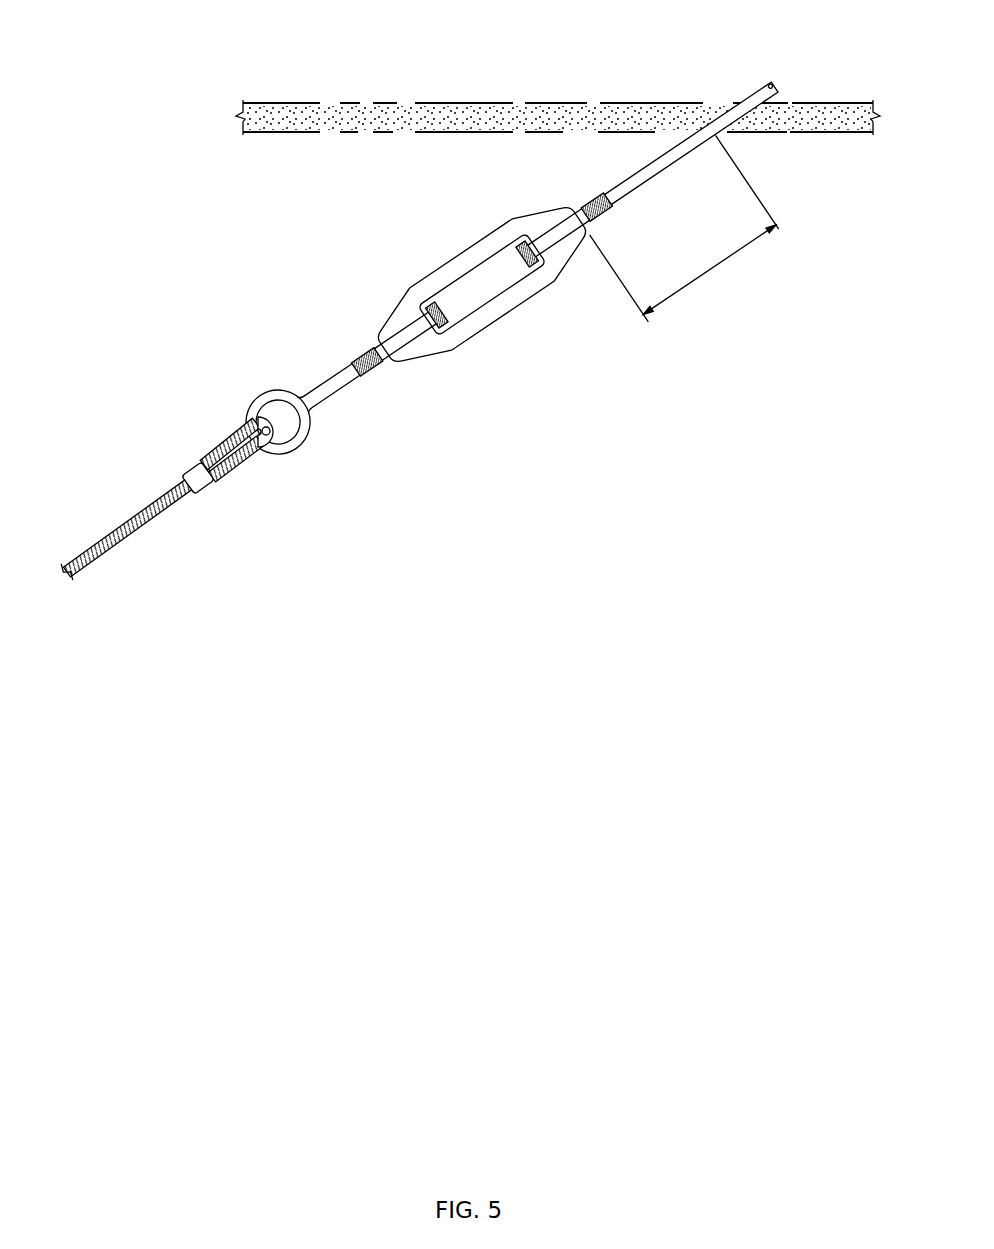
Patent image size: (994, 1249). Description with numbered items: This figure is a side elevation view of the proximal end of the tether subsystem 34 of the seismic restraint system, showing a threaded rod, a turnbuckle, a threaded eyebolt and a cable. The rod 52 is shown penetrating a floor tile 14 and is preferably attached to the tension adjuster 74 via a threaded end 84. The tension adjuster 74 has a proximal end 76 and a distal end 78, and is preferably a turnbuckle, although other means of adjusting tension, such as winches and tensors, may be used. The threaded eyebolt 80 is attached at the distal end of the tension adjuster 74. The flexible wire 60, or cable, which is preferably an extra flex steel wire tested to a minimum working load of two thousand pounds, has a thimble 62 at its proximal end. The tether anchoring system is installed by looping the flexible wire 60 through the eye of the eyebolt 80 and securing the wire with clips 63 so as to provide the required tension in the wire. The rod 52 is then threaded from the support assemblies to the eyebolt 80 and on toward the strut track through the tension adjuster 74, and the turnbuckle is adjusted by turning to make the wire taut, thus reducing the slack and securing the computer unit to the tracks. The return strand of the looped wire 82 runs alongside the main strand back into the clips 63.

The floor tile 14 is at (373, 103).
The tether subsystem 34 is at (245, 272).
The rod 52 is at (663, 150).
The flexible wire 60 is at (133, 530).
The thimble 62 is at (228, 447).
The clips 63 is at (197, 463).
The tension adjuster 74 is at (478, 333).
The proximal end 76 is at (395, 368).
The distal end 78 is at (556, 200).
The eyebolt 80 is at (337, 397).
The cable return strand 82 is at (240, 467).
The threaded end 84 is at (594, 237).